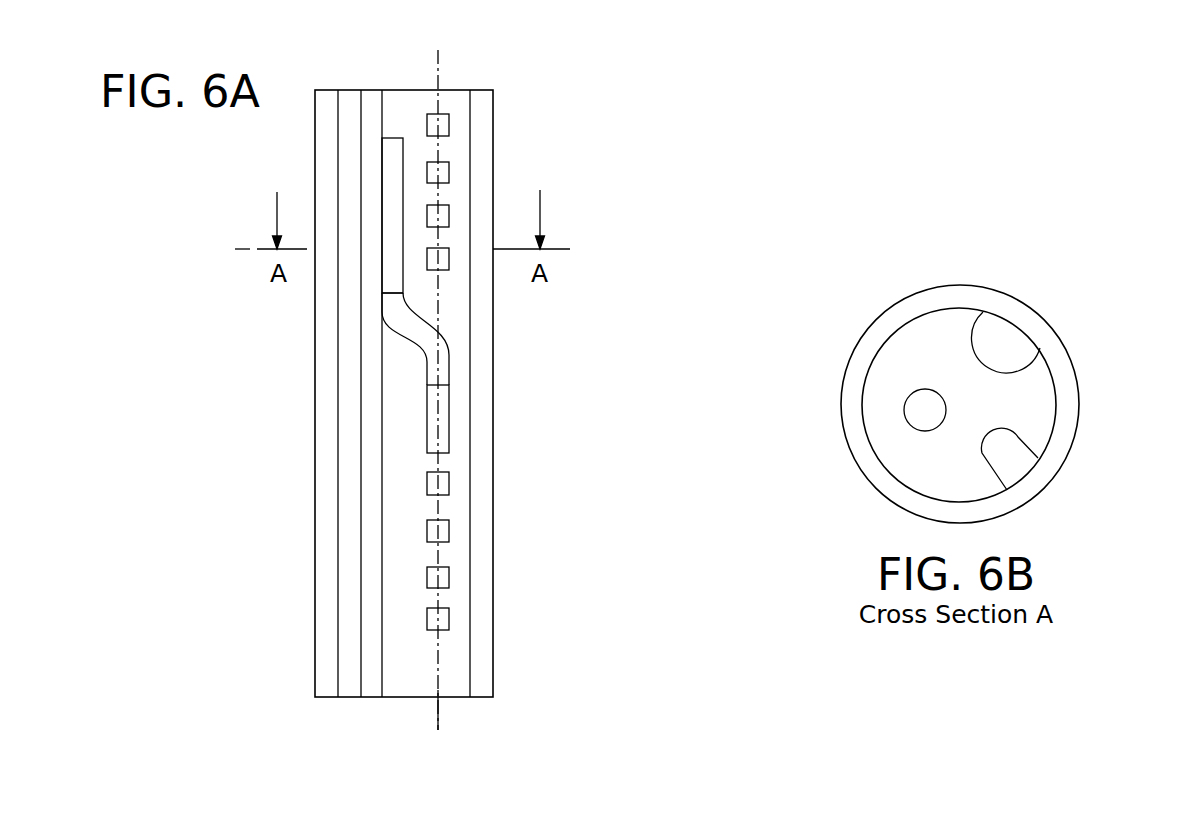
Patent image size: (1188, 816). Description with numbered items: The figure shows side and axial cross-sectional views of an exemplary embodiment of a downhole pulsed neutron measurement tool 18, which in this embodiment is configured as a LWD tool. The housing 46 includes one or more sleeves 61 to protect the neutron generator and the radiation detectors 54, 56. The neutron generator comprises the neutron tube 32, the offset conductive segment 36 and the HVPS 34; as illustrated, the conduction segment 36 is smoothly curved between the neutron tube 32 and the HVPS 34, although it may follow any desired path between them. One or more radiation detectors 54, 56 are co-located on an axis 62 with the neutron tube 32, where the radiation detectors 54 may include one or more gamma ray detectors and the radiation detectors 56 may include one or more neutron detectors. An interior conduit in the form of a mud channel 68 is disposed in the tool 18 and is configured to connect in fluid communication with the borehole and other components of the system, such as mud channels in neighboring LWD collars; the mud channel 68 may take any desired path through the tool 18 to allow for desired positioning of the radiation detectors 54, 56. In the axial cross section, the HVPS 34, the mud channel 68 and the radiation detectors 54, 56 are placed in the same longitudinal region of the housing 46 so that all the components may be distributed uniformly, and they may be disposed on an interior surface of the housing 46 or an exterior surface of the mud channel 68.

In FIG. 6B, the tool 18 is at (940, 160).
In FIG. 6A, the neutron tube 32 is at (449, 418).
In FIG. 6A, the HVPS 34 is at (403, 193).
In FIG. 6B, the HVPS 34 is at (988, 338).
In FIG. 6A, the offset conductive segment 36 is at (404, 343).
In FIG. 6A, the housing 46 is at (448, 95).
In FIG. 6A, the radiation detectors 54 is at (428, 538).
In FIG. 6A, the radiation detectors 56 is at (452, 253).
In FIG. 6B, the radiation detectors 56 is at (983, 452).
In FIG. 6A, the sleeves 61 is at (316, 436).
In FIG. 6A, the axis 62 is at (440, 717).
In FIG. 6A, the mud channel 68 is at (370, 678).
In FIG. 6B, the mud channel 68 is at (947, 412).